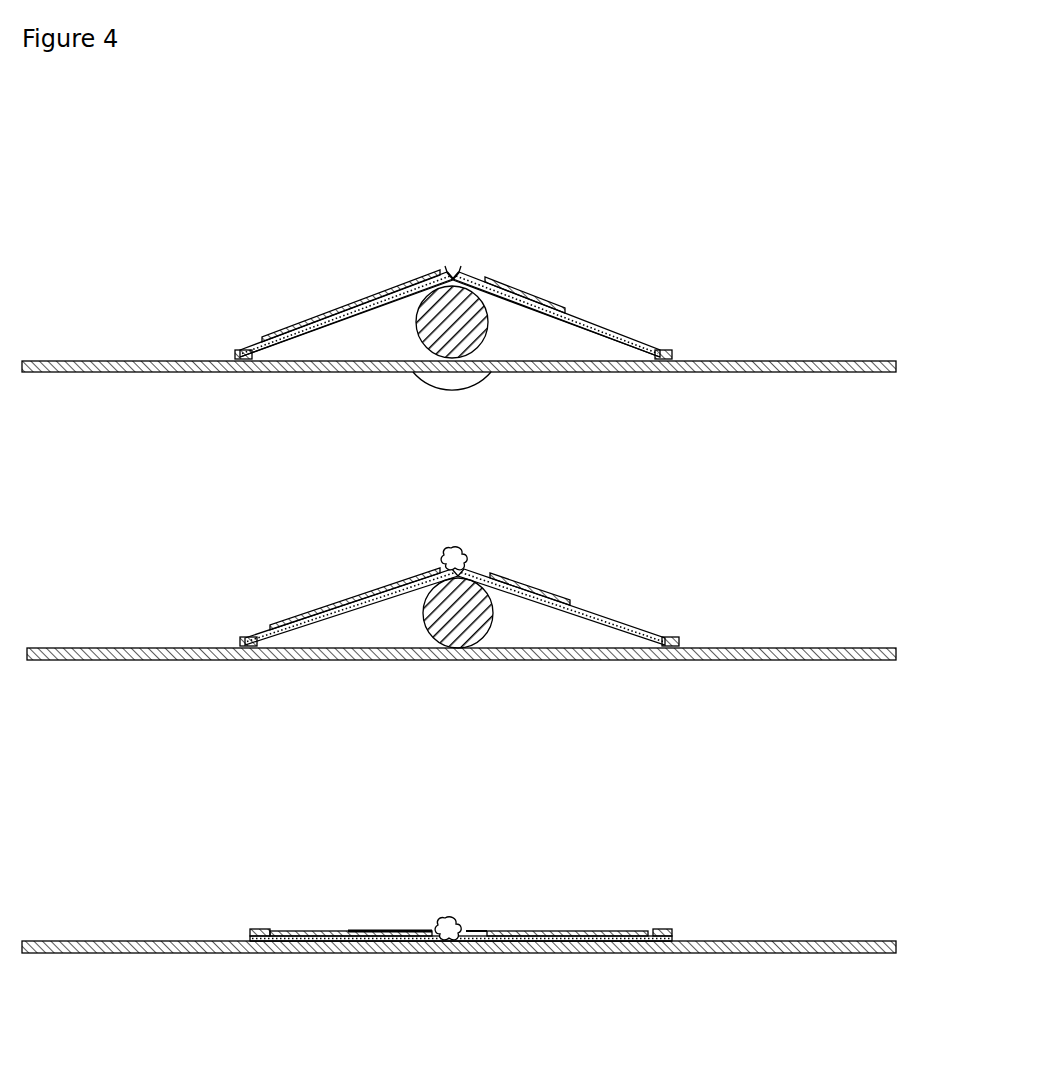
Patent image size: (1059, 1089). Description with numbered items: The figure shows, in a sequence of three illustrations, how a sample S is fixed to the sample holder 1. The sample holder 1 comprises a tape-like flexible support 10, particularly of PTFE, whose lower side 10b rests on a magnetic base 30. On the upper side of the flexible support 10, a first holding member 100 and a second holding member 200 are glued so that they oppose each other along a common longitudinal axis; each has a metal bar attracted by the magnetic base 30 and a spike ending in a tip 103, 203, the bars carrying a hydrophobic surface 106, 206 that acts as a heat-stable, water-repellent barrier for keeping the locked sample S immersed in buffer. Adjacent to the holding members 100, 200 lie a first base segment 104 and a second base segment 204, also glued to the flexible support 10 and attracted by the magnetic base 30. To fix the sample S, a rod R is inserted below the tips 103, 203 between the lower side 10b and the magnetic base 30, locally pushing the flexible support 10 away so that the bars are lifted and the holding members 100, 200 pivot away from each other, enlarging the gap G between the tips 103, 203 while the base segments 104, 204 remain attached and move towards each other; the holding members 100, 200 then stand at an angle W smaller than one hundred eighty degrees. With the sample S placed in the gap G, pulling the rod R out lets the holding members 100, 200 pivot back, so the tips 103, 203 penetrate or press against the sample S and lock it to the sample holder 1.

The sample holder 1 is at (226, 262).
The flexible support 10 is at (371, 318).
The lower side 10b is at (290, 358).
The magnetic base 30 is at (53, 372).
The first holding member 100 is at (590, 322).
The tip 103 is at (460, 272).
The first base segment 104 is at (665, 350).
The hydrophobic surface 106 is at (521, 292).
The second holding member 200 is at (328, 314).
The tip 203 is at (447, 268).
The second base segment 204 is at (240, 350).
The hydrophobic surface 206 is at (398, 284).
The gap G is at (453, 268).
The rod R is at (470, 355).
The sample S is at (463, 550).
The angle W is at (503, 357).